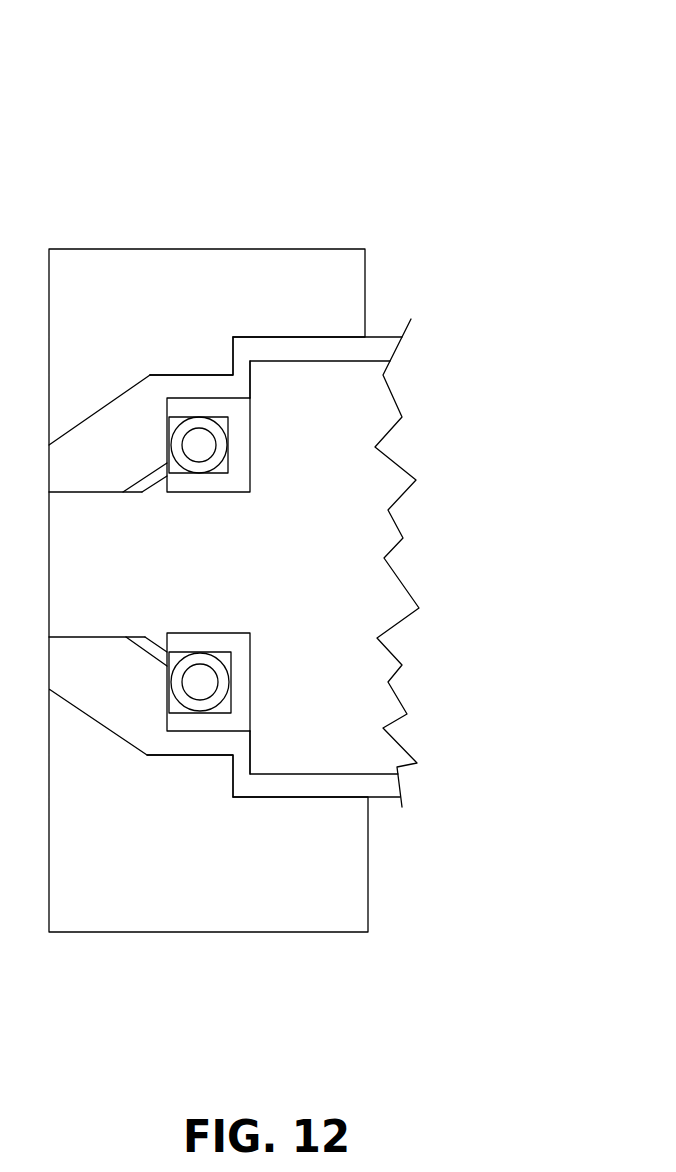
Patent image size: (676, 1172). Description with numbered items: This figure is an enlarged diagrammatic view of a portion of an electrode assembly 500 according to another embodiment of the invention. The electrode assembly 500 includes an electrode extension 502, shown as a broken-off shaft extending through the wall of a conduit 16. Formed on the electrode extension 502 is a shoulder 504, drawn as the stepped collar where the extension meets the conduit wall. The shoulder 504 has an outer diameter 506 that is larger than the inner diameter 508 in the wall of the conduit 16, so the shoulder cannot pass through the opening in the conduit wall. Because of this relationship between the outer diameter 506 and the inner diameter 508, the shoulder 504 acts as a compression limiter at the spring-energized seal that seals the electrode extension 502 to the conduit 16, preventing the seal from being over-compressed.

The conduit 16 is at (145, 332).
The electrode assembly 500 is at (392, 141).
The electrode extension 502 is at (303, 539).
The shoulder 504 is at (250, 382).
The outer diameter 506 is at (305, 361).
The inner diameter 508 is at (190, 375).